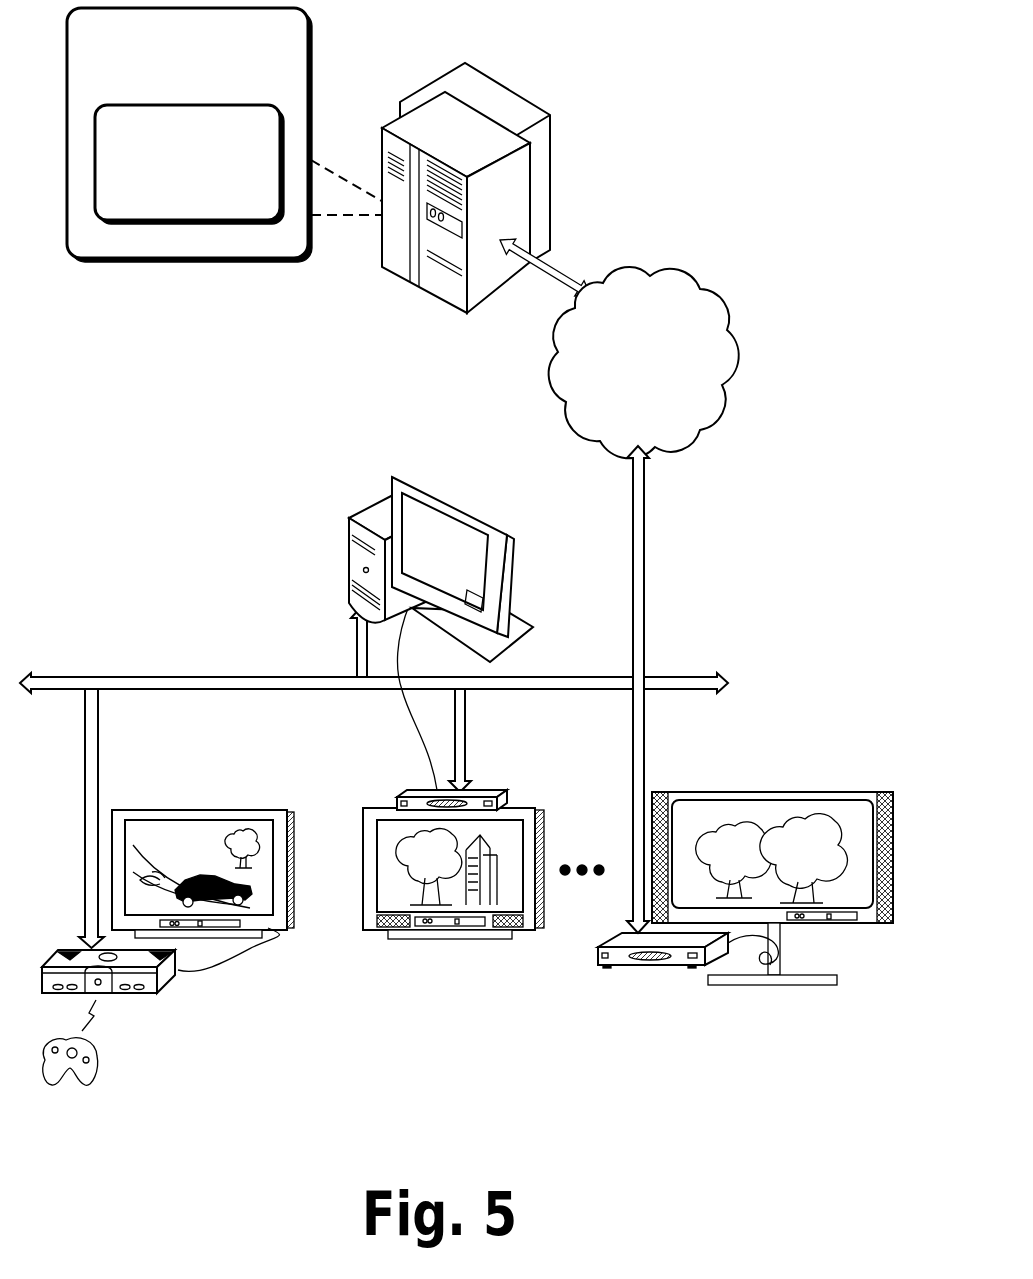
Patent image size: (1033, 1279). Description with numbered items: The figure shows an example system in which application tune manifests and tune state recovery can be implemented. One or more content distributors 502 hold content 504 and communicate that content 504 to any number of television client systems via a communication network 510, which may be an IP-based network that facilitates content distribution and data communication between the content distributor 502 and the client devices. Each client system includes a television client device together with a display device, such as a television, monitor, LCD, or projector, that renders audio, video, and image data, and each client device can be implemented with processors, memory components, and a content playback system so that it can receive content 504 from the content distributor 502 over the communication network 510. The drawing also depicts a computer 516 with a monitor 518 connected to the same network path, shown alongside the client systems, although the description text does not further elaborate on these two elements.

The content distributor 502 is at (580, 58).
The content 504 is at (207, 189).
The communication network 510 is at (732, 344).
The computer 516 is at (375, 518).
The monitor display 518 is at (477, 597).